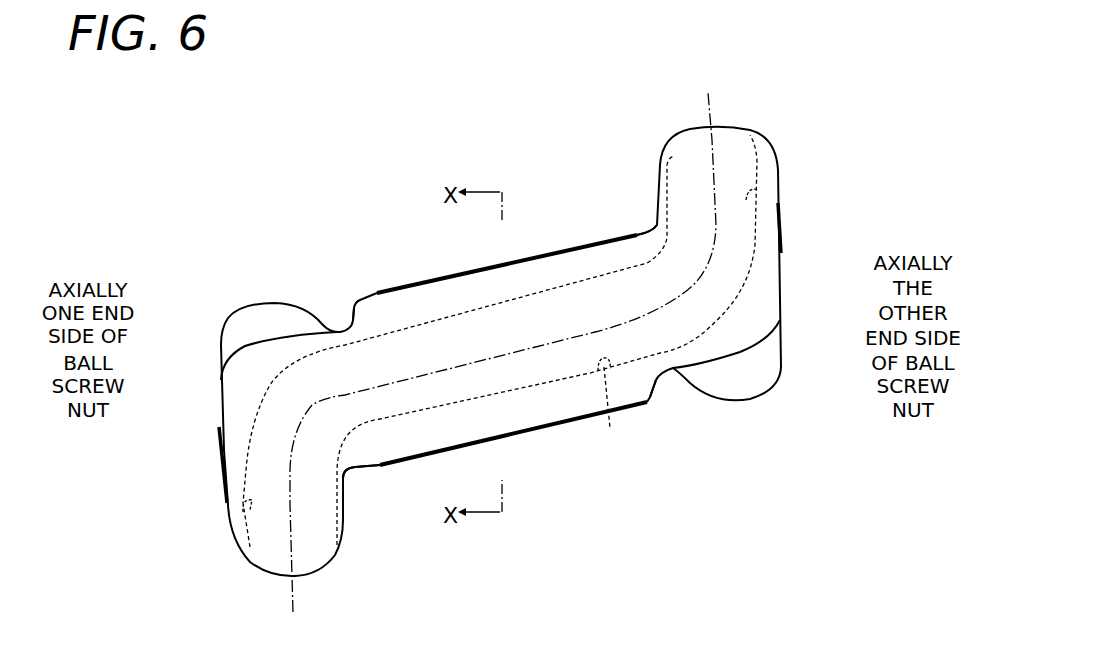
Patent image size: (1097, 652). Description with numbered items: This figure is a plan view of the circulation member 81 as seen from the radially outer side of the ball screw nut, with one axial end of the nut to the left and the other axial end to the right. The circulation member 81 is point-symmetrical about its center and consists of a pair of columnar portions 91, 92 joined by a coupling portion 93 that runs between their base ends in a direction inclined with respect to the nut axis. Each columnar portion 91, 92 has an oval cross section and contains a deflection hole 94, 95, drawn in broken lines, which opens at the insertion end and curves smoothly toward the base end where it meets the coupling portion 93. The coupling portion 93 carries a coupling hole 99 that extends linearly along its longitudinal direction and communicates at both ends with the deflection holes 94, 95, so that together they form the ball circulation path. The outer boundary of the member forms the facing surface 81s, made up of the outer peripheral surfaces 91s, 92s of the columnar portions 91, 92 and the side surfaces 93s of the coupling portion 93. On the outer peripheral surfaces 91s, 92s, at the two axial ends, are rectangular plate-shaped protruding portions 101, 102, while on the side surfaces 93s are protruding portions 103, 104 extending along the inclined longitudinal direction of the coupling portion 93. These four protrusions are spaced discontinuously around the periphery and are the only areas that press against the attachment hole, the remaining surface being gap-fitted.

The circulation member 81 is at (224, 191).
The facing surface 81s is at (505, 343).
The columnar portion 91 is at (236, 545).
The outer peripheral surface 91s is at (218, 425).
The columnar portion 92 is at (771, 153).
The outer peripheral surface 92s is at (782, 267).
The coupling portion 93 is at (400, 307).
The side surfaces 93s is at (637, 233).
The deflection hole 94 is at (242, 510).
The deflection hole 95 is at (763, 197).
The coupling hole 99 is at (611, 407).
The protruding portion 101 is at (221, 470).
The protruding portion 102 is at (782, 223).
The protruding portion 103 is at (547, 430).
The protruding portion 104 is at (540, 253).